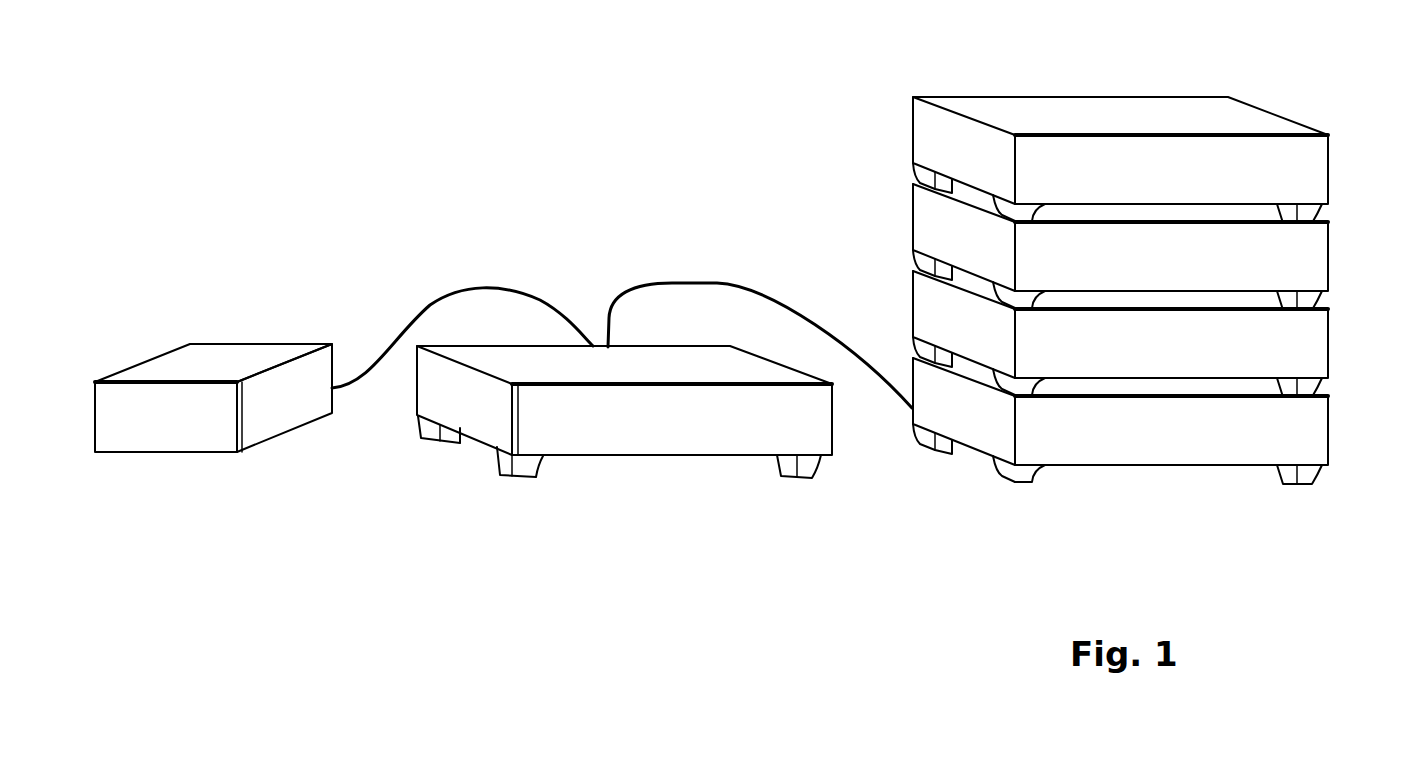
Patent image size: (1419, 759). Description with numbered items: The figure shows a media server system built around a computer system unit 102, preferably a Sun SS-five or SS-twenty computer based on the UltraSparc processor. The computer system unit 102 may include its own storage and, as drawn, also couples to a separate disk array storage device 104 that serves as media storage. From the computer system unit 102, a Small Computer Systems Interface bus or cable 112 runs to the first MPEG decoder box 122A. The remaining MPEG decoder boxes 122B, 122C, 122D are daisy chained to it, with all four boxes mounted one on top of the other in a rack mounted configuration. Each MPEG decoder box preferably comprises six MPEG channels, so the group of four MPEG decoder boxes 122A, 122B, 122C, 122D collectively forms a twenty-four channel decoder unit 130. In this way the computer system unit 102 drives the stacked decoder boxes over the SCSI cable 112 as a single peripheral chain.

The computer system unit 102 is at (635, 455).
The disk array storage device 104 is at (160, 452).
The SCSI bus or cable 112 is at (726, 283).
The MPEG decoder box 122A is at (1328, 437).
The MPEG decoder box 122B is at (1328, 352).
The MPEG decoder box 122C is at (1328, 262).
The MPEG decoder box 122D is at (1328, 170).
The 24 channel decoder unit 130 is at (1103, 78).